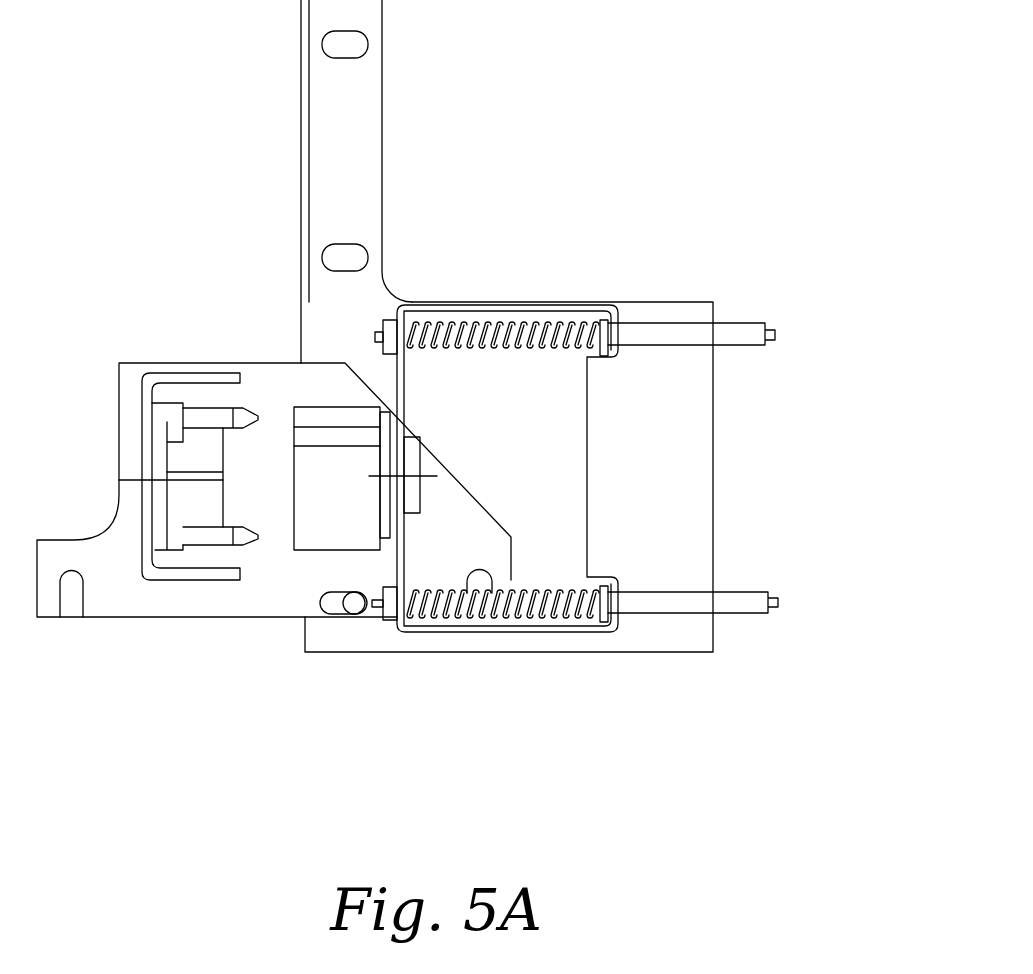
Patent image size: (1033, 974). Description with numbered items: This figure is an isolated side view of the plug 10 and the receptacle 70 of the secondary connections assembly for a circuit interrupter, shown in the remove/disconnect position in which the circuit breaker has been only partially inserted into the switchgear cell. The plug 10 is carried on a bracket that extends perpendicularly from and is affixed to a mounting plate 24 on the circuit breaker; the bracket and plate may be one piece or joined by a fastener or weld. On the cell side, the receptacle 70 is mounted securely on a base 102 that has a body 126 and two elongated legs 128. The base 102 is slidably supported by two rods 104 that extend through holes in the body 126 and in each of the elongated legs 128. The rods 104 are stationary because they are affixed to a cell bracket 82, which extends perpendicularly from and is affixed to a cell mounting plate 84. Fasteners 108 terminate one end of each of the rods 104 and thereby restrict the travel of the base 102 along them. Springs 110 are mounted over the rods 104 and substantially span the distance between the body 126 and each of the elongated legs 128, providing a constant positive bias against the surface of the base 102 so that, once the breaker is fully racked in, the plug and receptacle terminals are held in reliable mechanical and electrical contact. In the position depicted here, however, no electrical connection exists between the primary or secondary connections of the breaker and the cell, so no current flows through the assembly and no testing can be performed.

The plug 10 is at (200, 527).
The mounting plate 24 is at (102, 590).
The receptacle 70 is at (370, 460).
The cell bracket 82 is at (427, 320).
The cell mounting plate 84 is at (358, 102).
The base 102 is at (493, 303).
The rods 104 is at (777, 333).
The fasteners 108 is at (375, 337).
The springs 110 is at (597, 302).
The body 126 is at (390, 558).
The elongated legs 128 is at (553, 303).